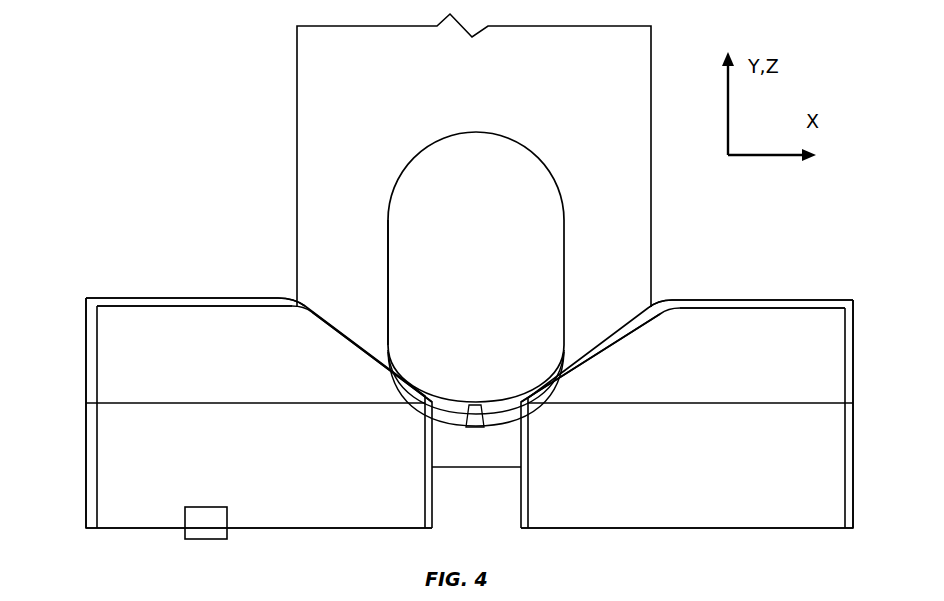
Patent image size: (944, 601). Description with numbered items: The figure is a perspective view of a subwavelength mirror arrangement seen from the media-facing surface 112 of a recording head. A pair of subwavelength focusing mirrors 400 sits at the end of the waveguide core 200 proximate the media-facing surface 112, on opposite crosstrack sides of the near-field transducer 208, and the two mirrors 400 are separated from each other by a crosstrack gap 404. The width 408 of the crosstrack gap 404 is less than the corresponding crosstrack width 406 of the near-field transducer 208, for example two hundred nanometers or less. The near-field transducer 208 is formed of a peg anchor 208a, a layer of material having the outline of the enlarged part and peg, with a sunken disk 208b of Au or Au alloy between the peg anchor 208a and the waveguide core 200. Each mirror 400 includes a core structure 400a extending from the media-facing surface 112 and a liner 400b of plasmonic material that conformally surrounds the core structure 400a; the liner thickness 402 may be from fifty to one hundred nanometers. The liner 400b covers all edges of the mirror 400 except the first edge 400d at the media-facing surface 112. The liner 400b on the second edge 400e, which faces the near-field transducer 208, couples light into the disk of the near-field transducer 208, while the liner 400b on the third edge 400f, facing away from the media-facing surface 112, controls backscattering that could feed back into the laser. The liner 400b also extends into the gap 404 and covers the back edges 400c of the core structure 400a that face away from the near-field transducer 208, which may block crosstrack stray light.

The media-facing surface 112 is at (203, 540).
The waveguide core 200 is at (297, 48).
The near-field transducer 208 is at (340, 213).
The peg anchor 208a is at (397, 254).
The sunken disk 208b is at (510, 420).
The subwavelength focusing mirror 400 is at (157, 222).
The core structure 400a is at (131, 330).
The liner 400b is at (222, 297).
The back edge 400c is at (70, 367).
The first edge 400d is at (316, 497).
The second edge 400e is at (372, 360).
The third edge 400f is at (192, 303).
The liner thickness 402 is at (258, 316).
The crosstrack gap 404 is at (492, 493).
The crosstrack width 406 is at (564, 168).
The width of crosstrack gap 408 is at (521, 552).